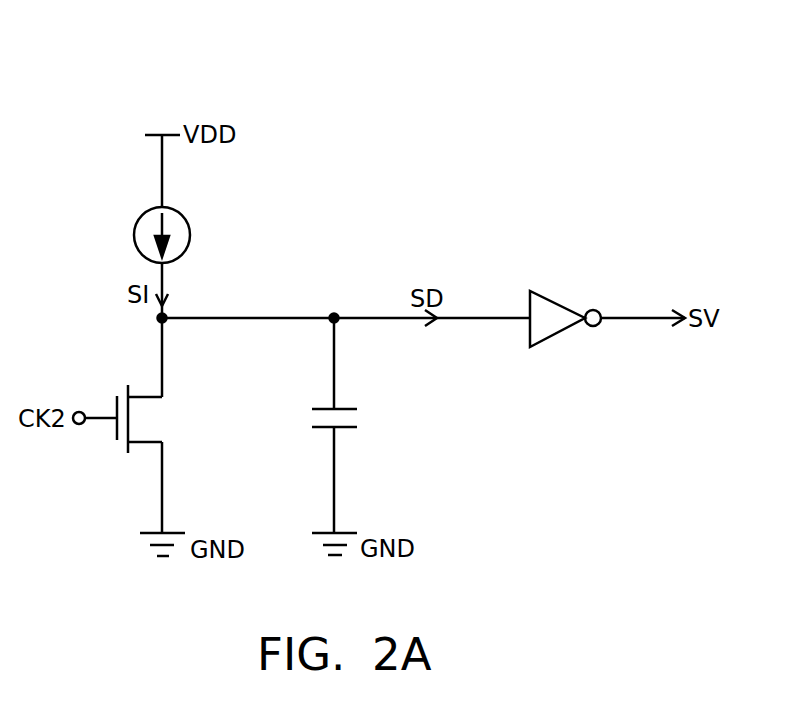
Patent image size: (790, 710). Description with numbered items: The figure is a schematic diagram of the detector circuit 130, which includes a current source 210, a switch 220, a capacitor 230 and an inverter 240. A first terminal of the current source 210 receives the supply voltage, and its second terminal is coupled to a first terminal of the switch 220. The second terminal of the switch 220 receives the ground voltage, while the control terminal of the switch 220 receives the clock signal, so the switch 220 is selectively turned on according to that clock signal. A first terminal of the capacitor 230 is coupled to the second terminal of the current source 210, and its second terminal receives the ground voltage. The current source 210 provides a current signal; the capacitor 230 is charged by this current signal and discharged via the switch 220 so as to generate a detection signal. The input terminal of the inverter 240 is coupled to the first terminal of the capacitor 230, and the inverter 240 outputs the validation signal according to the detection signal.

The detector circuit 130 is at (368, 100).
The current source 210 is at (136, 226).
The switch 220 is at (163, 452).
The capacitor 230 is at (347, 428).
The inverter 240 is at (548, 337).